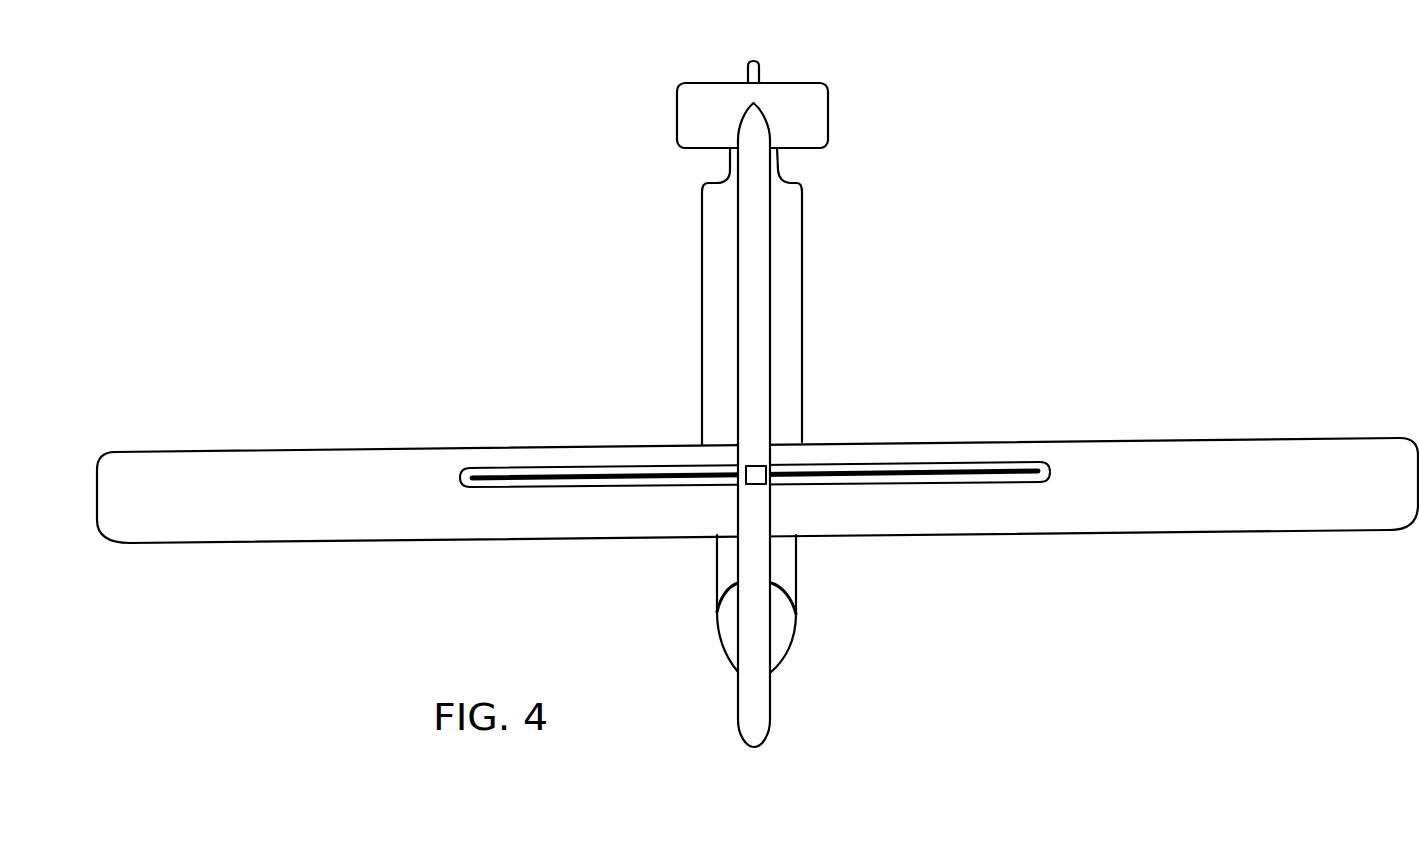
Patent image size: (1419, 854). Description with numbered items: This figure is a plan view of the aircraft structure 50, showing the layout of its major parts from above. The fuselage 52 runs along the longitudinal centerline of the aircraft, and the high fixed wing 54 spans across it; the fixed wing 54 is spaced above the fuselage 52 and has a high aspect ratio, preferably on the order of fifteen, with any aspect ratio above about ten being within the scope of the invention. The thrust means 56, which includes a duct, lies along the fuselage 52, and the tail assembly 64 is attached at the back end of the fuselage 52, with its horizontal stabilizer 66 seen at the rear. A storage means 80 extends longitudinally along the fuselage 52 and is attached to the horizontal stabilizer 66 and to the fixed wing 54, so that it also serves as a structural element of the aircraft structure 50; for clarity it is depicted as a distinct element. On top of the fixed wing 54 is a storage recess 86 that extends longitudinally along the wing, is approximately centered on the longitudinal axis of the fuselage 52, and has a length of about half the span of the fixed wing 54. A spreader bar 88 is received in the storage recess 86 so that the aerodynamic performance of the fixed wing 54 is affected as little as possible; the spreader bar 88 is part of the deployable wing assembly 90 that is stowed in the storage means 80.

The aircraft structure 50 is at (757, 404).
The fuselage 52 is at (790, 575).
The fixed wing 54 is at (1092, 522).
The thrust means 56 is at (790, 316).
The tail assembly 64 is at (798, 112).
The horizontal stabilizer 66 is at (703, 102).
The storage means 80 is at (755, 722).
The storage recess 86 is at (540, 466).
The spreader bar 88 is at (608, 478).
The deployable wing assembly 90 is at (758, 478).